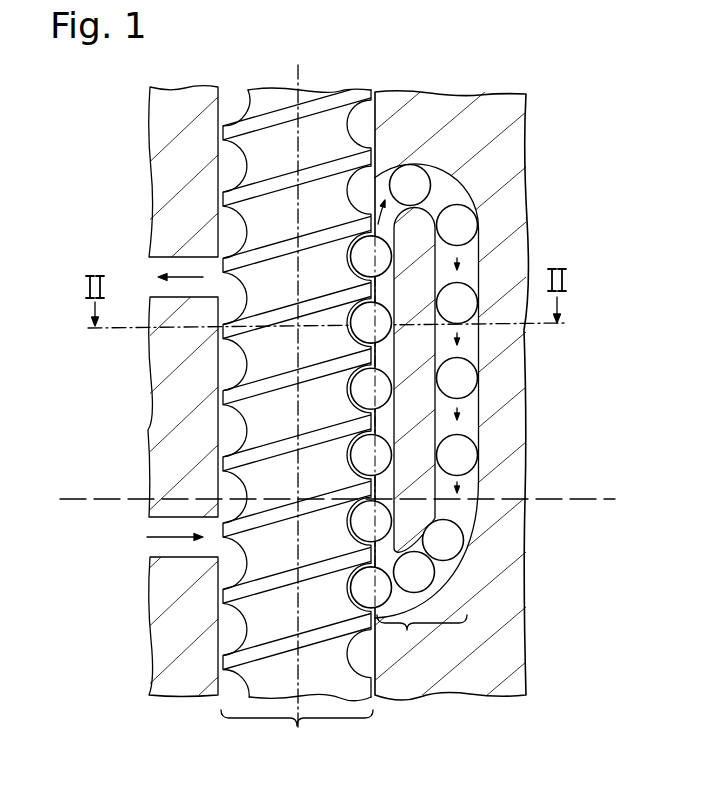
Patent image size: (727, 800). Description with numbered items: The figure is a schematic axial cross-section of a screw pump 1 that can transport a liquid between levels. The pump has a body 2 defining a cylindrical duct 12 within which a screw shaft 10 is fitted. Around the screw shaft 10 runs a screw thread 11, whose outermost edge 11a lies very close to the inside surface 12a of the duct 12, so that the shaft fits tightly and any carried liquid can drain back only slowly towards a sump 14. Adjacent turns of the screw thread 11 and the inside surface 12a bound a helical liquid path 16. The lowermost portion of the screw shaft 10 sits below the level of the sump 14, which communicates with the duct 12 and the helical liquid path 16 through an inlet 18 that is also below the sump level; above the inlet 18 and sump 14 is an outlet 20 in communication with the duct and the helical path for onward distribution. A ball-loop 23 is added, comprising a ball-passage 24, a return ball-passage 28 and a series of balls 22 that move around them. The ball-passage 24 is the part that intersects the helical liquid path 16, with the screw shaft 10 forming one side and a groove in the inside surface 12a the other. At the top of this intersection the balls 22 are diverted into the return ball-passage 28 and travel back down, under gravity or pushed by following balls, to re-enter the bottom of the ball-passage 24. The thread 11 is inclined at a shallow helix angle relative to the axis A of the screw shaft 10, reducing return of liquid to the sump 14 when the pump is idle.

The screw pump 1 is at (517, 58).
The body 2 is at (473, 396).
The screw shaft 10 is at (320, 107).
The screw thread 11 is at (280, 457).
The outermost edge 11a is at (373, 423).
The cylindrical duct 12 is at (297, 733).
The inside surface 12a is at (232, 162).
The sump 14 is at (77, 543).
The helical liquid path 16 is at (225, 367).
The inlet 18 is at (150, 538).
The outlet 20 is at (182, 275).
The balls 22 is at (417, 183).
The ball-loop 23 is at (407, 633).
The ball-passage 24 is at (388, 496).
The return ball-passage 28 is at (480, 250).
The axis A is at (297, 82).